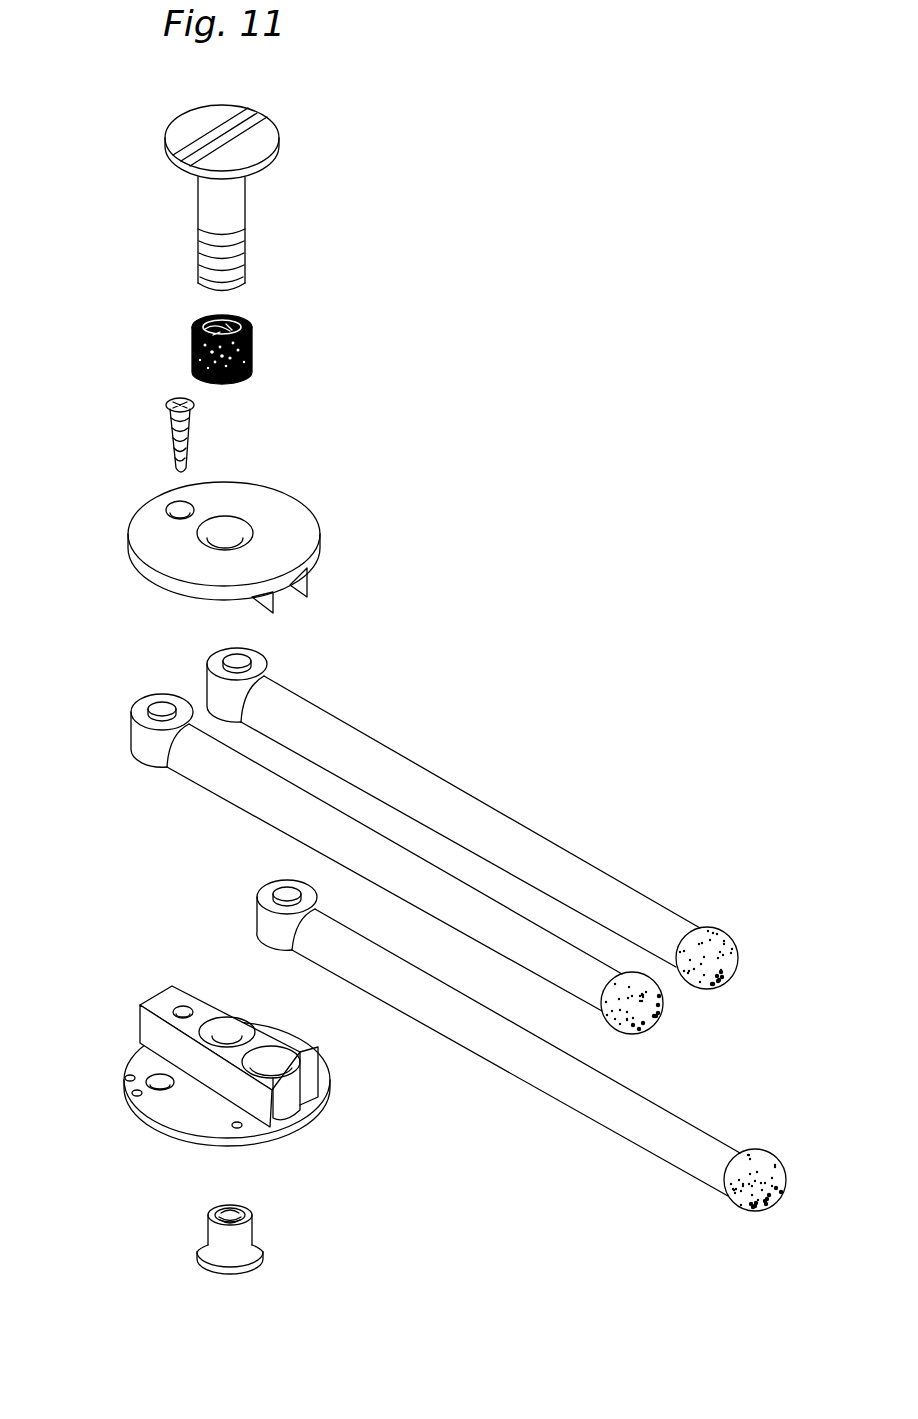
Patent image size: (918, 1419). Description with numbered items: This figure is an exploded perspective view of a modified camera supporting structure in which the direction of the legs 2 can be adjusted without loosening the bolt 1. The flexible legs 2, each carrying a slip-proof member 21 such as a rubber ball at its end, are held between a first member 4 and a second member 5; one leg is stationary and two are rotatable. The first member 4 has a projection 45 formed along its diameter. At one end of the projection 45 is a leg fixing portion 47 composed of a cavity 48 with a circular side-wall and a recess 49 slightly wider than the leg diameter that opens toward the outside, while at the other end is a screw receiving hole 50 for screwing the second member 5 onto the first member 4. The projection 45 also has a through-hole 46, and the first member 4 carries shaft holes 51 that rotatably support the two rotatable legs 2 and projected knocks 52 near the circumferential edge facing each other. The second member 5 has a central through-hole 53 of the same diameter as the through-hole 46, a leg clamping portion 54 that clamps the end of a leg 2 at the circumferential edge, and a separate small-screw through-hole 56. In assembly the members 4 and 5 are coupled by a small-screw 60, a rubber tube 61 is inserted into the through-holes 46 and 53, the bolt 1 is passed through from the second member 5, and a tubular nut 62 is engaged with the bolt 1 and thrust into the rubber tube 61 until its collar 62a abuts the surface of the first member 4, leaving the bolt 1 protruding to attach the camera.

The bolt 1 is at (279, 127).
The rubber tube 61 is at (190, 350).
The small-screw 60 is at (167, 430).
The small-screw through-hole 56 is at (167, 508).
The through-hole 53 is at (235, 528).
The second member 5 is at (238, 519).
The leg clamping portion 54 is at (293, 587).
The leg 2 is at (457, 795).
The slip-proof member 21 is at (712, 928).
The screw receiving hole 50 is at (153, 998).
The projection 45 is at (178, 987).
The through-hole 46 is at (227, 1030).
The first member 4 is at (238, 1063).
The cavity 48 is at (283, 1057).
The recess 49 is at (315, 1100).
The leg fixing portion 47 is at (305, 1120).
The projected knock 52 is at (135, 1092).
The shaft hole 51 is at (165, 1085).
The tubular nut 62 is at (173, 1278).
The collar 62a is at (232, 1275).